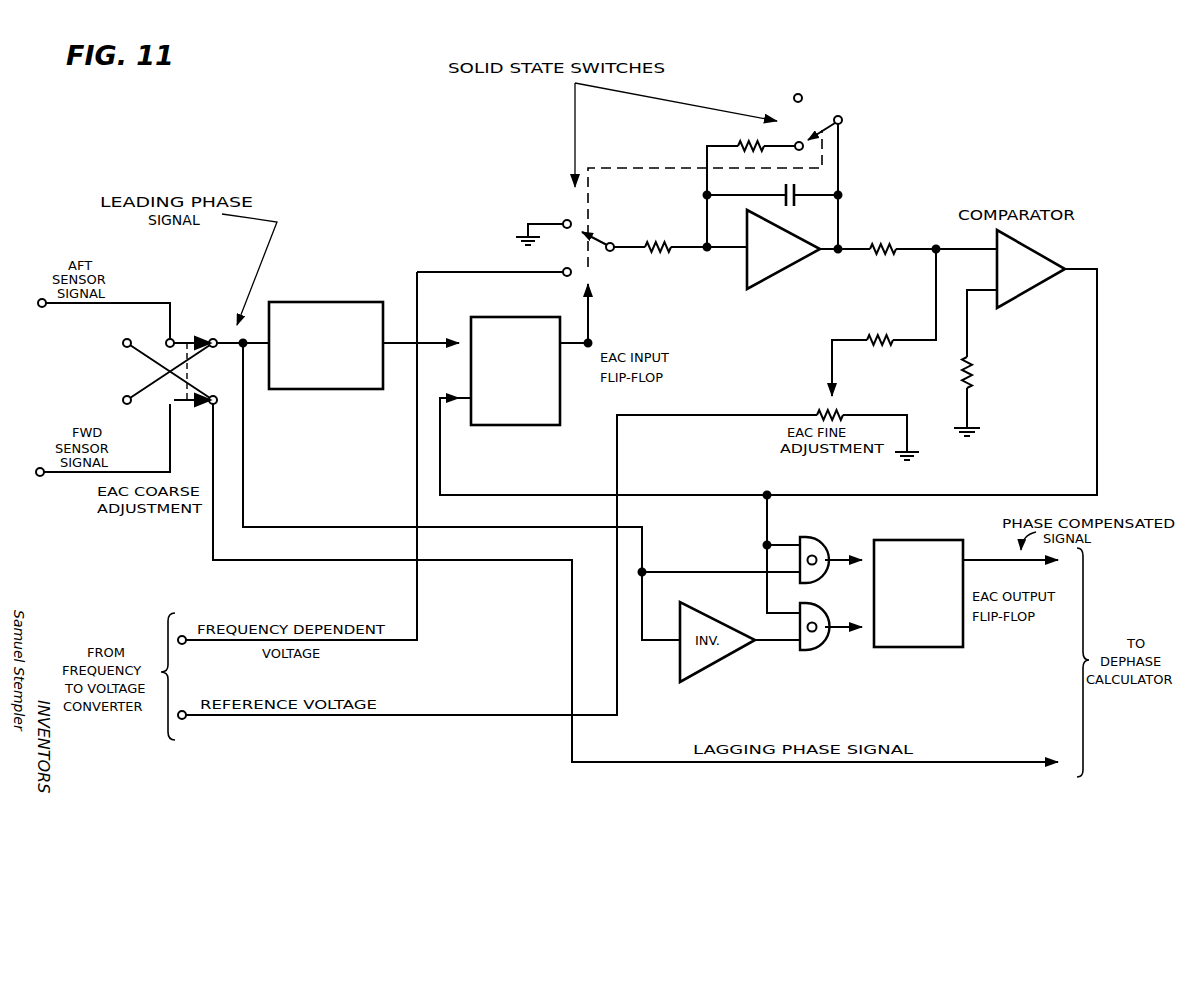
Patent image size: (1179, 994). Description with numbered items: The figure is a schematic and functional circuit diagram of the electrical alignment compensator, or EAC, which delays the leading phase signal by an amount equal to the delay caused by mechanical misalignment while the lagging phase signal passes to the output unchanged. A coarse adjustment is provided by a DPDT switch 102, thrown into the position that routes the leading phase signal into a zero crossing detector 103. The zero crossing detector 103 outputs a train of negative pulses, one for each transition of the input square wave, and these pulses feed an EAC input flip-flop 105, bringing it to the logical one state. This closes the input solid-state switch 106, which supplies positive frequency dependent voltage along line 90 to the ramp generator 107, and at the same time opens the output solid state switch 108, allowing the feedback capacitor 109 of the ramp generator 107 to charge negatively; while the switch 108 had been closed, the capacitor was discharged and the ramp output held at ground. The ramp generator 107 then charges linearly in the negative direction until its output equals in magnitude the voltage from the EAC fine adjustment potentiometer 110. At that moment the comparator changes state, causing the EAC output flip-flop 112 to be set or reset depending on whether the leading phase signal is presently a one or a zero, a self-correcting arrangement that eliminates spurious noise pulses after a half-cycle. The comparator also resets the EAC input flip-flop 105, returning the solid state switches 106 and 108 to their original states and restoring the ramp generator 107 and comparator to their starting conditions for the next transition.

The line 90 is at (473, 271).
The DPDT switch 102 is at (222, 283).
The zero crossing detector 103 is at (356, 265).
The EAC input flip-flop 105 is at (531, 426).
The input solid-state switch 106 is at (604, 259).
The ramp generator 107 is at (742, 258).
The output solid state switch 108 is at (836, 100).
The feedback capacitor 109 is at (800, 191).
The EAC fine adjustment potentiometer 110 is at (843, 410).
The EAC output flip-flop 112 is at (921, 648).